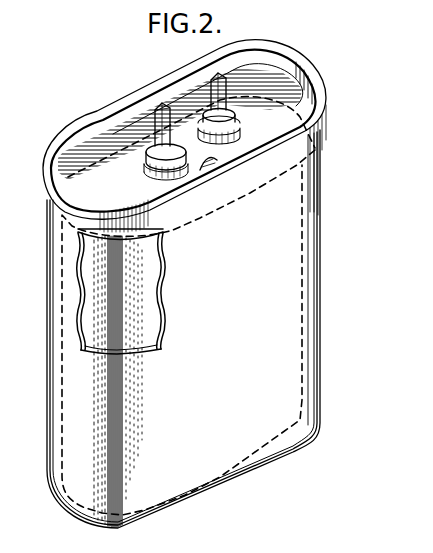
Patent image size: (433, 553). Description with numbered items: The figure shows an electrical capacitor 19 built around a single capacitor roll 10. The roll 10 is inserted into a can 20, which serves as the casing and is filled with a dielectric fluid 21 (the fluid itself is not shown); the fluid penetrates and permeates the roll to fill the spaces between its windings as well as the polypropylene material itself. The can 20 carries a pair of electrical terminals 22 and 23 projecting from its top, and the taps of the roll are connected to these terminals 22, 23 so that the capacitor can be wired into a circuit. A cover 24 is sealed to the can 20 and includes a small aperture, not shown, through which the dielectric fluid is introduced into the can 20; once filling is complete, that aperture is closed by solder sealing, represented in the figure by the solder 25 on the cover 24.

The capacitor roll 10 is at (95, 282).
The capacitor 19 is at (123, 78).
The can 20 is at (265, 410).
The dielectric fluid 21 is at (90, 317).
The electrical terminal 22 is at (158, 98).
The electrical terminal 23 is at (228, 78).
The cover 24 is at (100, 155).
The solder 25 is at (209, 167).